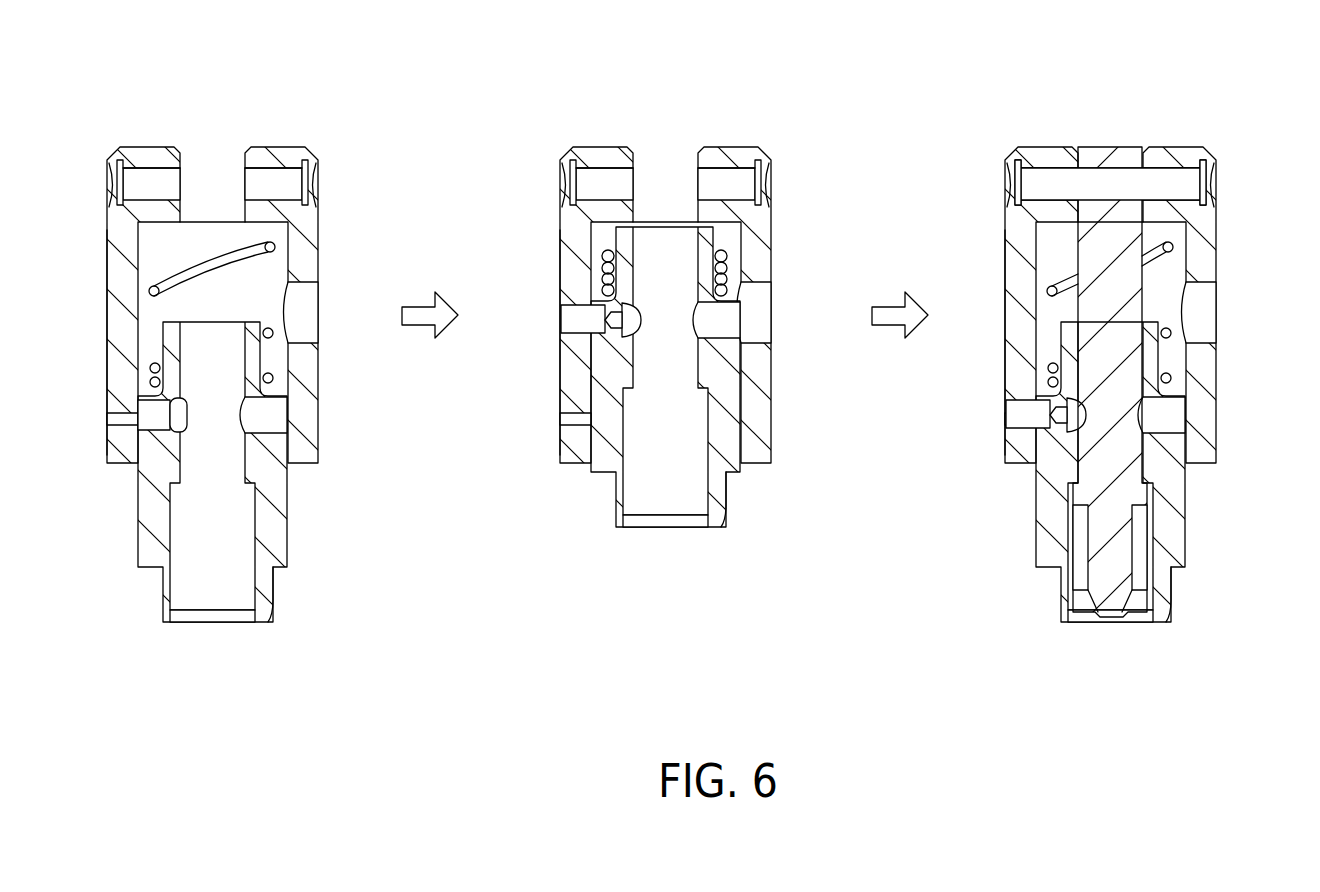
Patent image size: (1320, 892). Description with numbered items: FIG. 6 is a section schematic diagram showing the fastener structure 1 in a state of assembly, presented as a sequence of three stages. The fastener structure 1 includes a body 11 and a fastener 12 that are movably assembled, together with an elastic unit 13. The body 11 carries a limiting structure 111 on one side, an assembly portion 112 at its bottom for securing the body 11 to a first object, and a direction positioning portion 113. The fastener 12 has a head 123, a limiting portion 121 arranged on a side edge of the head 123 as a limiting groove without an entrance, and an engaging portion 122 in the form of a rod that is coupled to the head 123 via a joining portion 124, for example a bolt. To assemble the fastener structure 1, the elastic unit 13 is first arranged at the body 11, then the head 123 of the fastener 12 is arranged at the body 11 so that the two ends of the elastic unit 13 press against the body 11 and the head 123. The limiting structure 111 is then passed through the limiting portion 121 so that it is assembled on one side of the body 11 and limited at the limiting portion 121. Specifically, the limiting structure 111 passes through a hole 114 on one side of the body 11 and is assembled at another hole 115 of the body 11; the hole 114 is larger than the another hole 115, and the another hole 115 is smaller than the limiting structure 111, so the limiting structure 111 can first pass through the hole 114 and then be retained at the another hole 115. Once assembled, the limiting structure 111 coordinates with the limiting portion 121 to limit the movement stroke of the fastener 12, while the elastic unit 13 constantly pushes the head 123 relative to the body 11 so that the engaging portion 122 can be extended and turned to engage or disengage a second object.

The fastener structure 1 is at (72, 102).
The body 11 is at (289, 516).
The fastener 12 is at (311, 141).
The elastic unit 13 is at (274, 248).
The limiting structure 111 is at (578, 320).
The assembly portion 112 is at (275, 592).
The direction positioning portion 113 is at (162, 600).
The hole 114 is at (264, 412).
The another hole 115 is at (150, 425).
The limiting portion 121 is at (130, 363).
The engaging portion 122 is at (1105, 515).
The head 123 is at (268, 146).
The joining portion 124 is at (1050, 182).